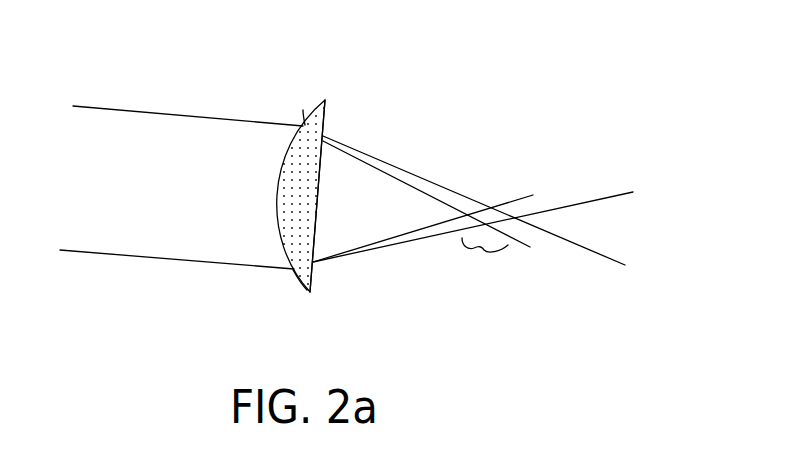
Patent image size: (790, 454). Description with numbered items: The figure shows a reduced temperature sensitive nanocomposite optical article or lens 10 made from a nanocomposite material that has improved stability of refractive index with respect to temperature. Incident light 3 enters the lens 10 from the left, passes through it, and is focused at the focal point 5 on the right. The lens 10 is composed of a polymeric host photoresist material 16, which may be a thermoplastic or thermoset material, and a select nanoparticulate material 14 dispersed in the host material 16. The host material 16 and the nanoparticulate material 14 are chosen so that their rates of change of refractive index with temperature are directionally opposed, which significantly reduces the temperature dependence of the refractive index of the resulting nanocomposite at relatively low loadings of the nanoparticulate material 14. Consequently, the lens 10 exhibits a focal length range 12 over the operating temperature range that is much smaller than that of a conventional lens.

The incident light 3 is at (48, 190).
The focal point 5 is at (510, 214).
The nanocomposite optical article or lens 10 is at (327, 117).
The focal length range 12 is at (480, 250).
The nanoparticulate material 14 is at (305, 125).
The polymeric host photoresist material 16 is at (313, 268).